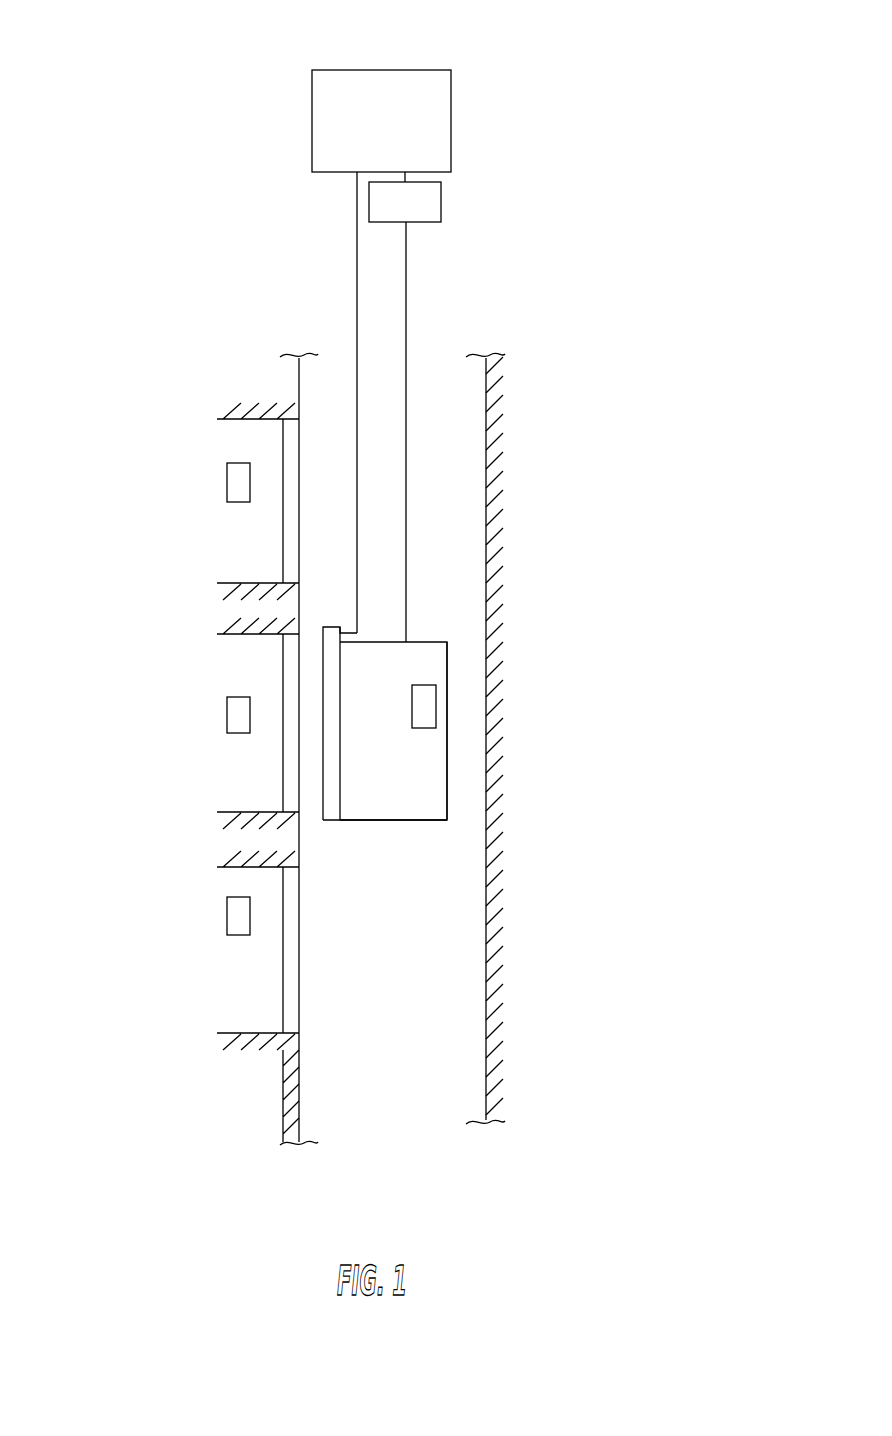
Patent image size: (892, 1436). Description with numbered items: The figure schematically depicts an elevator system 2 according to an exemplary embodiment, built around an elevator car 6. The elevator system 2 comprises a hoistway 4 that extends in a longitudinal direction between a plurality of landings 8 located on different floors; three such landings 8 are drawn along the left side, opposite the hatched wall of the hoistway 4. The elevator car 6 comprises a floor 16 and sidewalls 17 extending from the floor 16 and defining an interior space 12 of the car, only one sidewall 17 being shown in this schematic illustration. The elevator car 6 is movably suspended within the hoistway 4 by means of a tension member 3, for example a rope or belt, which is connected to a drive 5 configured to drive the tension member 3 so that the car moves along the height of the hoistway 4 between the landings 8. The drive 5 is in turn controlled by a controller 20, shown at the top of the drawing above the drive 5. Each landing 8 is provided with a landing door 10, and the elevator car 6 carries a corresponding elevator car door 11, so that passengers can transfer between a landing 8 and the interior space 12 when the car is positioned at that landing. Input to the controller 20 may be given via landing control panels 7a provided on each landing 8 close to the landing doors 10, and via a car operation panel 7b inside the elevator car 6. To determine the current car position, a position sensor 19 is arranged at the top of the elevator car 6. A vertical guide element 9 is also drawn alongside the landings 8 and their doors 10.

The elevator system 2 is at (514, 43).
The controller 20 is at (322, 124).
The drive 5 is at (387, 212).
The tension member 3 is at (406, 297).
The hoistway 4 is at (449, 366).
The guide rail 9 is at (300, 483).
The landing door 10 is at (287, 527).
The landing 8 is at (206, 567).
The landing control panel 7a is at (237, 478).
The elevator car 6 is at (404, 827).
The position sensor 19 is at (330, 626).
The elevator car door 11 is at (333, 700).
The interior space 12 is at (416, 656).
The car operation panel 7b is at (424, 722).
The floor 16 is at (370, 818).
The sidewall 17 is at (446, 772).